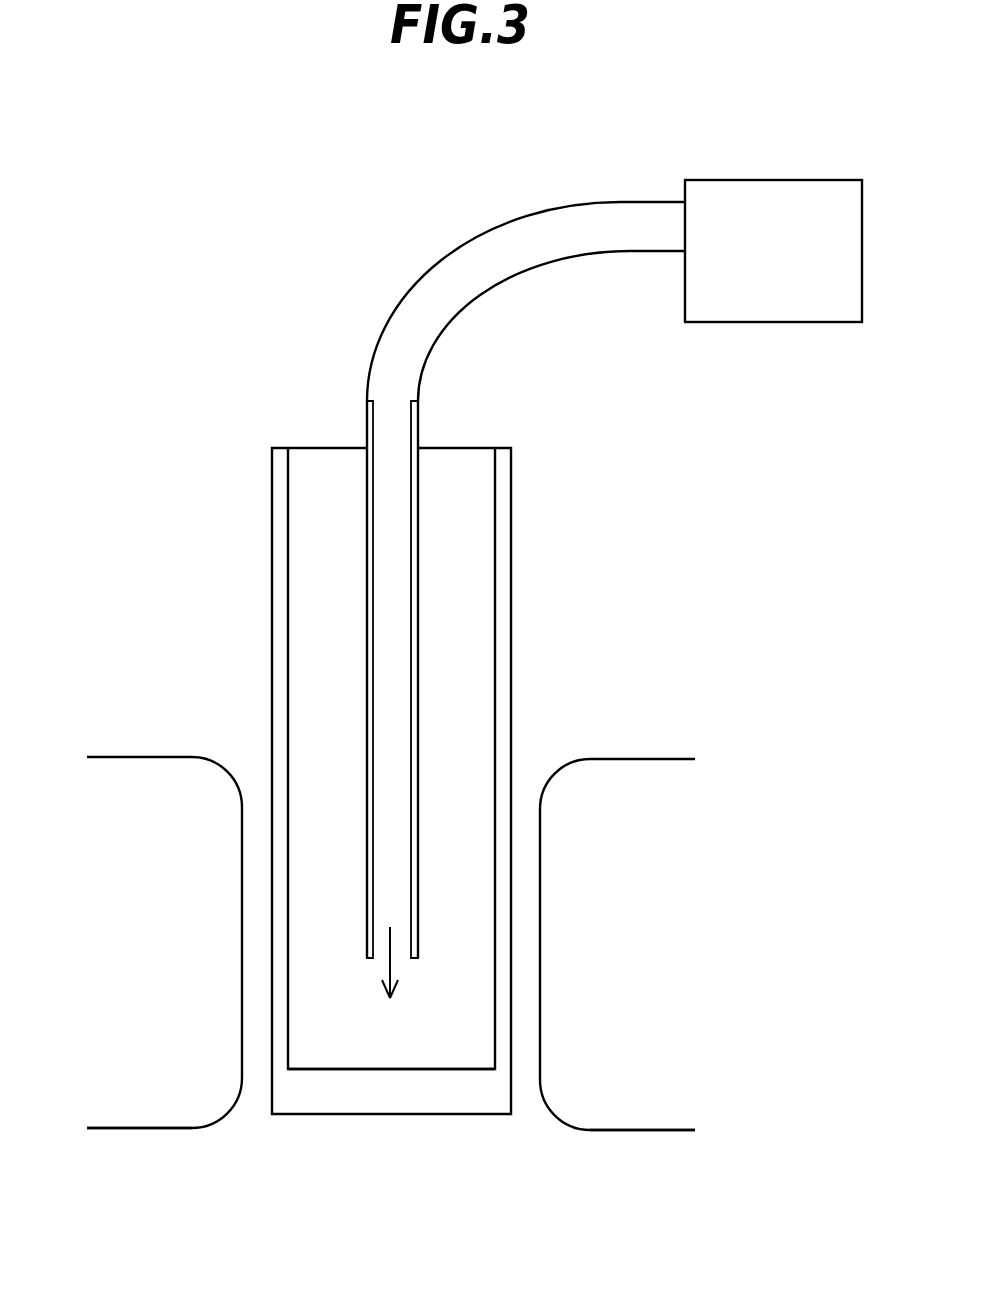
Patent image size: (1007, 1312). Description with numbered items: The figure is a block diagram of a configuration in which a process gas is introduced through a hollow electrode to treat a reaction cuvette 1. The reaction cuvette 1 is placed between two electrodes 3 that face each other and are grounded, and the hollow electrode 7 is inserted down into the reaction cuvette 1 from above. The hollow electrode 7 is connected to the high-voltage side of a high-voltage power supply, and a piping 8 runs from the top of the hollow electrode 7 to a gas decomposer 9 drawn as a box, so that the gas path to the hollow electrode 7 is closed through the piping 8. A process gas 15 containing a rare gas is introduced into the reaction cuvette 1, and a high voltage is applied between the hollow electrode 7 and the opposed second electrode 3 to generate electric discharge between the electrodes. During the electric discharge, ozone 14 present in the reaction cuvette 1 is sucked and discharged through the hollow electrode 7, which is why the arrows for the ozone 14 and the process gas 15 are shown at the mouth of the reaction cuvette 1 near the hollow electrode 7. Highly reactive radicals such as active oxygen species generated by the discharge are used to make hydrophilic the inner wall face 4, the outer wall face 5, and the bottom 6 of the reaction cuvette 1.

The reaction cuvette 1 is at (511, 797).
The electrode 3 is at (142, 1128).
The inner wall face of the reaction cuvette 4 is at (288, 862).
The outer wall face of the reaction cuvette 5 is at (272, 813).
The bottom of the reaction cuvette 6 is at (327, 1068).
The hollow electrode 7 is at (367, 410).
The piping 8 is at (475, 253).
The gas decomposer 9 is at (776, 322).
The ozone 14 is at (330, 477).
The process gas 15 is at (662, 236).